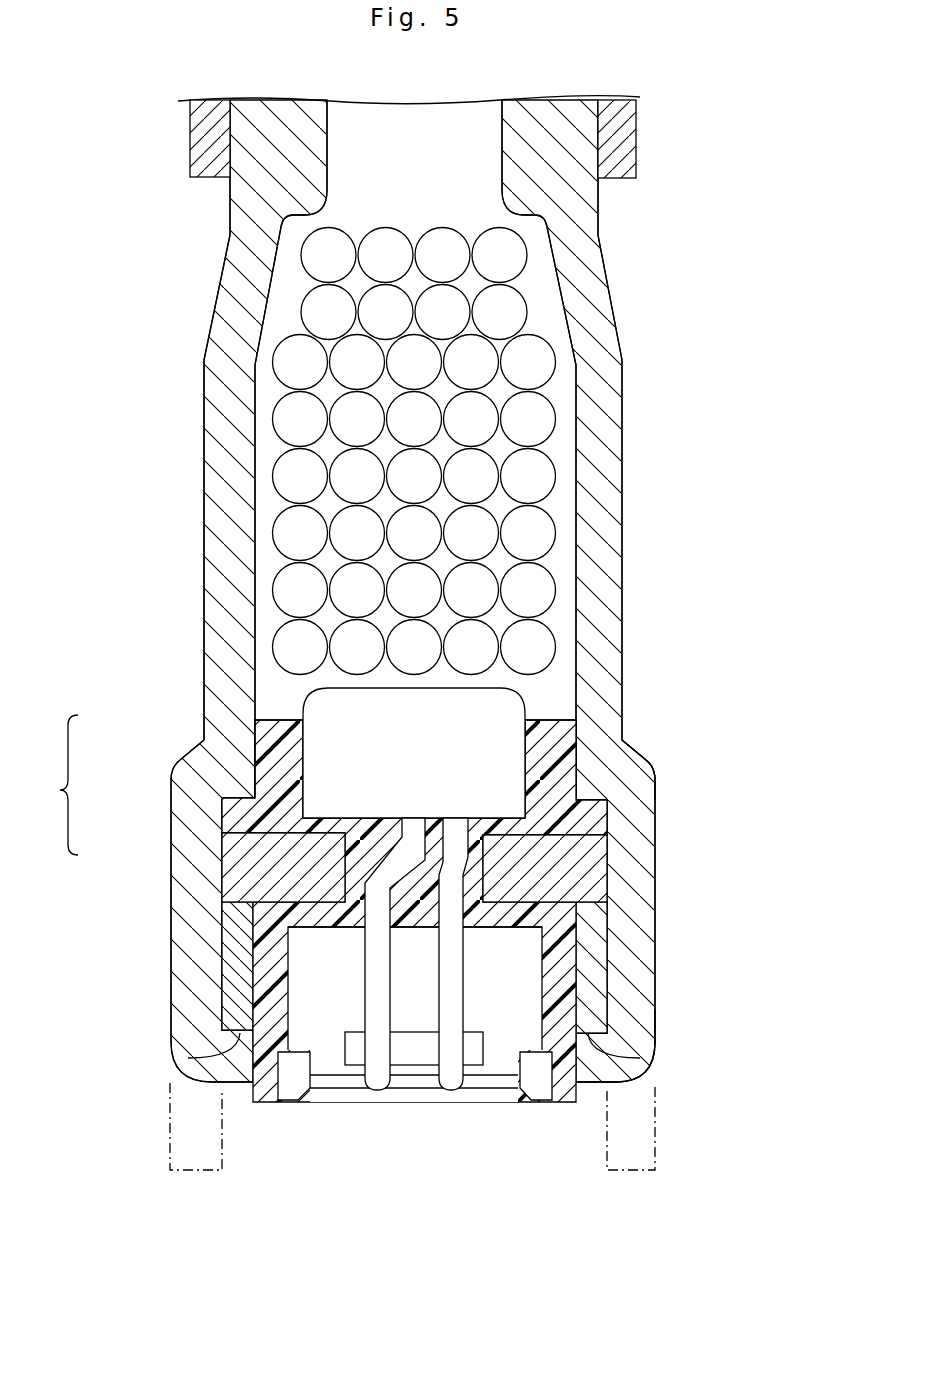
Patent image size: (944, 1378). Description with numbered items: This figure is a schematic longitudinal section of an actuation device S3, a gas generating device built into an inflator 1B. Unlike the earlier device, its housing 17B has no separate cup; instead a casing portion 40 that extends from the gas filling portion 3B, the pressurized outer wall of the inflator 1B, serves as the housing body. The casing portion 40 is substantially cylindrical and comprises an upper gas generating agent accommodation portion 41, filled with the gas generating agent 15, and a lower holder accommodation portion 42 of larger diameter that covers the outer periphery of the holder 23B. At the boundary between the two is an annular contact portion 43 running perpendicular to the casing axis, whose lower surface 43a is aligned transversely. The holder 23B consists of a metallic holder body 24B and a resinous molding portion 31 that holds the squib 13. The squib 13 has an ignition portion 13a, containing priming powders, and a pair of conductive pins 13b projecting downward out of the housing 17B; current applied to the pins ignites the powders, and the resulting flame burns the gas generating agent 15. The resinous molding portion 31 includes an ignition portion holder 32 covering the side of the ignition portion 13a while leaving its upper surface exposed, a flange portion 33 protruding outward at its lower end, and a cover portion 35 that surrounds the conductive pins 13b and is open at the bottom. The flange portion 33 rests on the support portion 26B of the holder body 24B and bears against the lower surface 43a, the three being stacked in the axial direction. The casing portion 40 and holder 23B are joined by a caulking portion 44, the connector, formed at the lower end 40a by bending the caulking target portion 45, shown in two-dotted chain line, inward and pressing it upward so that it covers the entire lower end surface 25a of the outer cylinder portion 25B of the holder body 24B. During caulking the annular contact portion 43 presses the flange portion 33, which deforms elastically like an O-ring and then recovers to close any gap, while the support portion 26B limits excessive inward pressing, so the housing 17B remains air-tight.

The inflator 1B is at (630, 96).
The gas filling portion 3B is at (627, 145).
The actuation device S3 is at (624, 268).
The gas generating agent 15 is at (538, 424).
The gas generating agent accommodation portion 41 is at (633, 522).
The casing portion 40 is at (200, 708).
The holder accommodation portion 42 is at (660, 896).
The annular contact portion 43 is at (625, 770).
The lower surface 43a is at (606, 811).
The lower end 40a is at (638, 1036).
The lower end surface 25a is at (606, 1060).
The outer cylinder portion 25B is at (238, 1035).
The holder body 24B is at (215, 985).
The holder 23B is at (213, 895).
The support portion 26B is at (575, 868).
The housing 17B is at (46, 785).
The squib 13 is at (497, 897).
The ignition portion 13a is at (510, 716).
The conductive pins 13b is at (377, 1080).
The ignition portion holder 32 is at (565, 749).
The flange portion 33 is at (597, 824).
The cover portion 35 is at (565, 984).
The resinous molding portion 31 is at (607, 1152).
The caulking portion 44 is at (266, 1107).
The caulking target portion 45 is at (192, 1148).